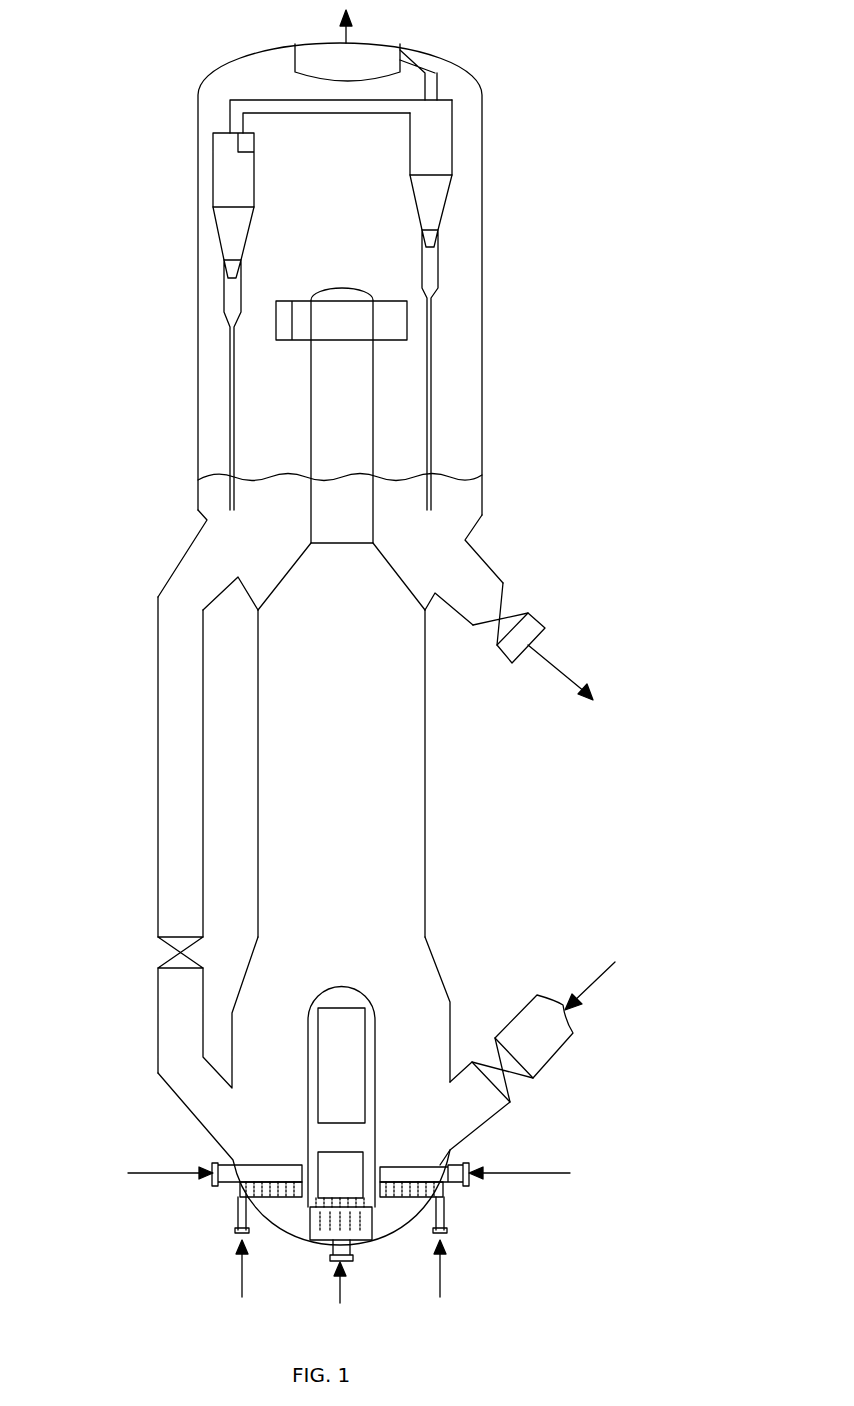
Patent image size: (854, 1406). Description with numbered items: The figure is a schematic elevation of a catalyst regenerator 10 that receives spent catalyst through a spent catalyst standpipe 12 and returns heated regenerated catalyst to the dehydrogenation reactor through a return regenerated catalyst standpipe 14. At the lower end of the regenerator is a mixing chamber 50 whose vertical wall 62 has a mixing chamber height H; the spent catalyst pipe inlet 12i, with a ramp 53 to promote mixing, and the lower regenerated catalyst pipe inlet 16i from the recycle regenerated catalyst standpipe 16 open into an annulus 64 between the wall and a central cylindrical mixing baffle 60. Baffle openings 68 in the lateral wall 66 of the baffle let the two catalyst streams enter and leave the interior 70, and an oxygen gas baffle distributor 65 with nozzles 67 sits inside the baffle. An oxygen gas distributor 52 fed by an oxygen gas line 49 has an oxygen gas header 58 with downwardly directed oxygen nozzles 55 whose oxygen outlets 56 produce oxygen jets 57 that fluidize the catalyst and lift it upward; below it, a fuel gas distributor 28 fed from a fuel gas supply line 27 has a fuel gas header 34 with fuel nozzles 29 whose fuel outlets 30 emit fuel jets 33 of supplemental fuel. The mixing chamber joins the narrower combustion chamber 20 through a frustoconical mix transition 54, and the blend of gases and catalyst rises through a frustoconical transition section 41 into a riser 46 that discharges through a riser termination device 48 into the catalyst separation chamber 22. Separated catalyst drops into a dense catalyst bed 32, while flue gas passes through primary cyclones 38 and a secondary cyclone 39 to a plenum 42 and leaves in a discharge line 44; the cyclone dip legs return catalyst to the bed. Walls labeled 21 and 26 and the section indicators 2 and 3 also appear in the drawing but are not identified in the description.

The catalyst regenerator 10 is at (147, 657).
The spent catalyst standpipe 12 is at (550, 1065).
The spent catalyst pipe inlet 12i is at (453, 1112).
The return regenerated catalyst standpipe 14 is at (473, 595).
The recycle regenerated catalyst standpipe 16 is at (170, 785).
The regenerated catalyst pipe inlet 16i is at (232, 1105).
The combustion chamber 20 is at (412, 777).
The riser wall 21 is at (425, 828).
The catalyst separation chamber 22 is at (482, 368).
The riser 26 is at (425, 680).
The fuel gas supply line 27 is at (240, 1262).
The fuel gas distributor 28 is at (240, 1200).
The fuel nozzle 29 is at (287, 1190).
The fuel outlet 30 is at (280, 1185).
The dense catalyst bed 32 is at (467, 505).
The fuel jet 33 is at (292, 1205).
The fuel gas header 34 is at (280, 1200).
The primary cyclone 38 is at (213, 183).
The secondary cyclone 39 is at (443, 142).
The frustoconical transition section 41 is at (302, 555).
The plenum 42 is at (377, 50).
The discharge line 44 is at (345, 35).
The riser 46 is at (370, 388).
The riser termination device 48 is at (278, 312).
The oxygen gas line 49 is at (148, 1178).
The mixing chamber 50 is at (242, 1053).
The oxygen gas distributor 52 is at (213, 1165).
The ramp 53 is at (460, 1150).
The mix transition 54 is at (442, 968).
The oxygen nozzle 55 is at (233, 1188).
The oxygen outlet 56 is at (382, 1160).
The oxygen jet 57 is at (297, 1200).
The oxygen gas header 58 is at (455, 1183).
The mixing baffle 60 is at (373, 1038).
The vertical wall 62 is at (450, 1040).
The annulus 64 is at (262, 1020).
The oxygen gas baffle distributor 65 is at (360, 1235).
The lateral wall 66 is at (310, 1122).
The nozzle 67 is at (336, 1207).
The baffle opening 68 is at (343, 1063).
The interior 70 is at (341, 1065).
The section line 2 is at (270, 1152).
The section line 3 is at (93, 1133).
The mixing chamber height H is at (705, 1007).